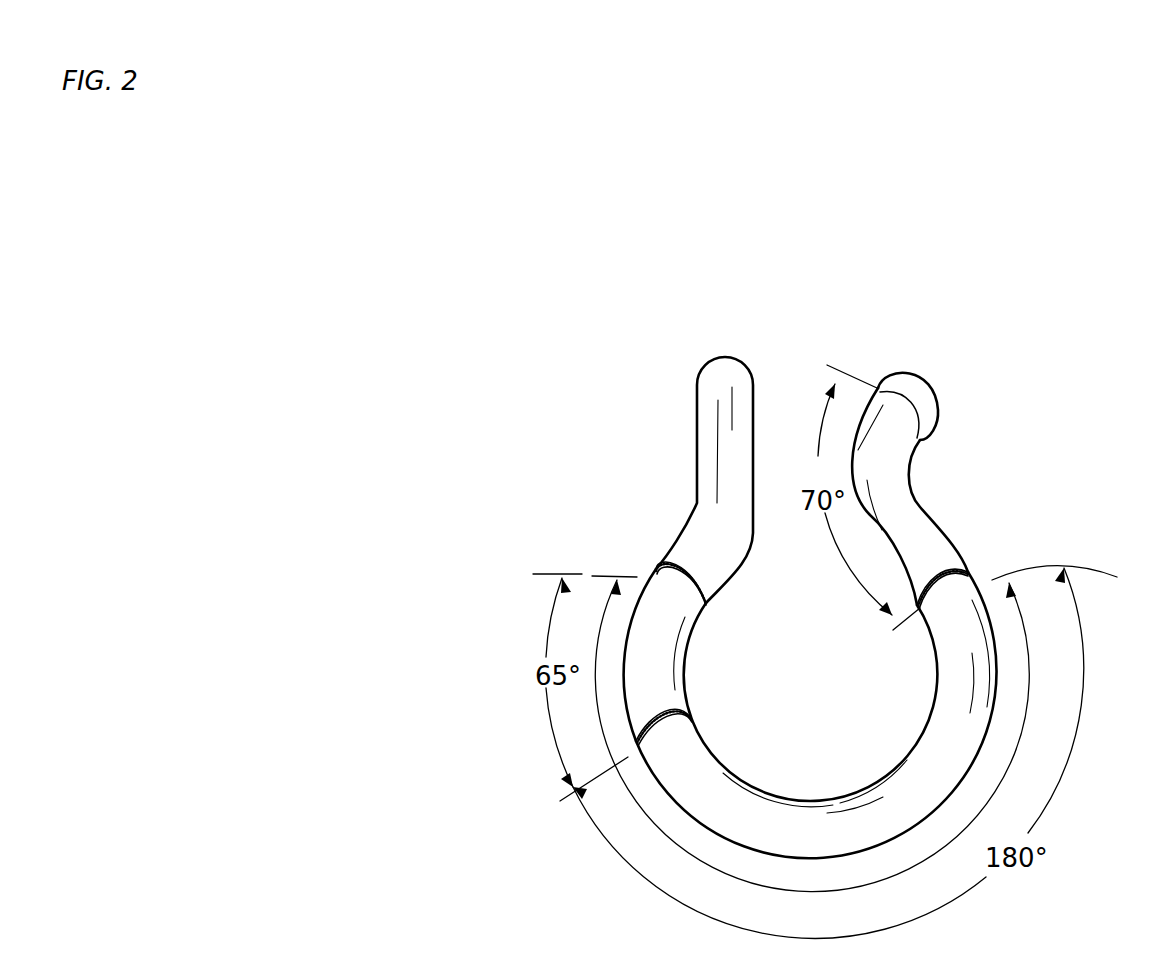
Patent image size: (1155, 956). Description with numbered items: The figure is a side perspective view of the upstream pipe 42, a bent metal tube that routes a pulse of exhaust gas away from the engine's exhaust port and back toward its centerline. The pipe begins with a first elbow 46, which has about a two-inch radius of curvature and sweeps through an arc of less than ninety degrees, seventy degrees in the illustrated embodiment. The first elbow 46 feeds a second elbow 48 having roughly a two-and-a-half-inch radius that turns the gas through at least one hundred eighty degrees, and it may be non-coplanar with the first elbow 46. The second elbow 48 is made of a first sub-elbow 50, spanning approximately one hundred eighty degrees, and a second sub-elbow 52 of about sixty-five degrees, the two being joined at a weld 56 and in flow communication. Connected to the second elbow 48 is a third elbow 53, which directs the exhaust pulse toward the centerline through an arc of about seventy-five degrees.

The upstream pipe 42 is at (852, 296).
The first elbow 46 is at (913, 462).
The second elbow 48 is at (1015, 752).
The first sub-elbow 50 is at (912, 747).
The second sub-elbow 52 is at (687, 651).
The third elbow 53 is at (697, 472).
The weld 56 is at (688, 713).